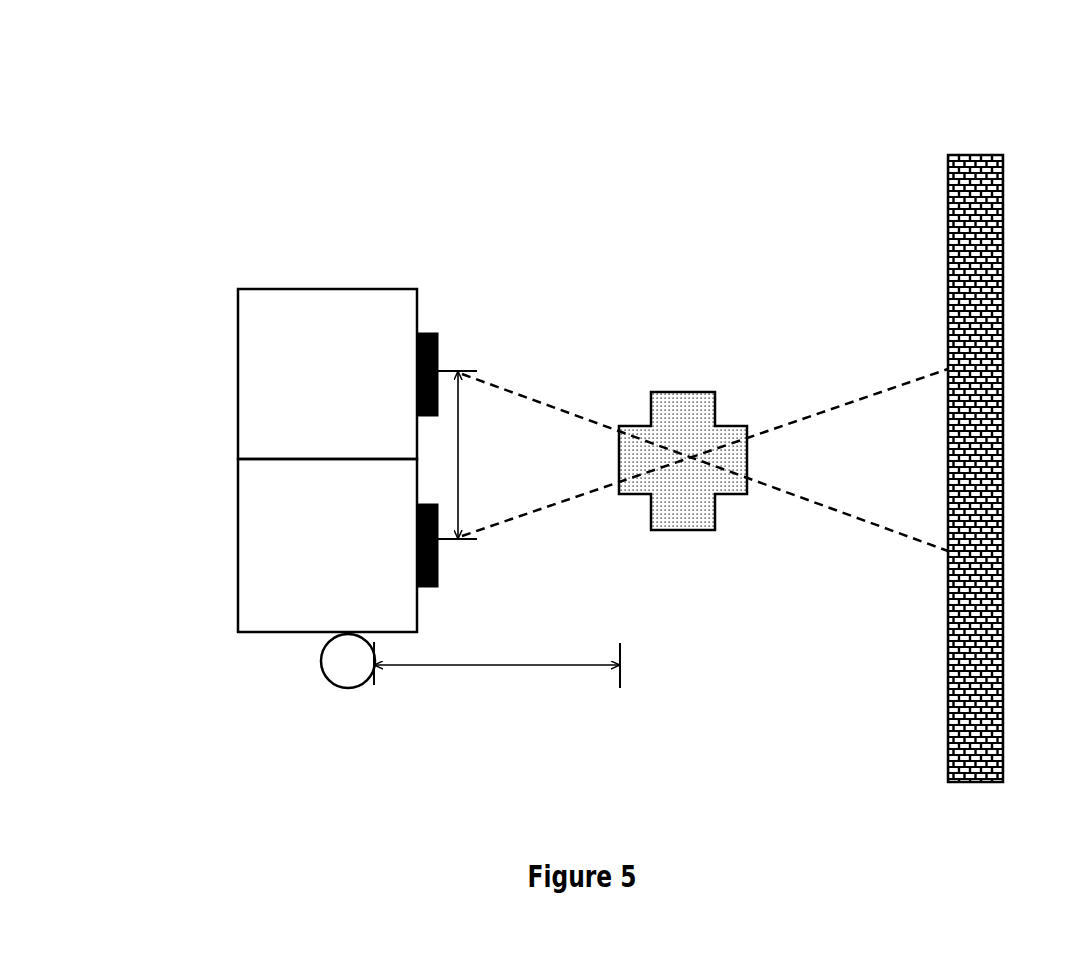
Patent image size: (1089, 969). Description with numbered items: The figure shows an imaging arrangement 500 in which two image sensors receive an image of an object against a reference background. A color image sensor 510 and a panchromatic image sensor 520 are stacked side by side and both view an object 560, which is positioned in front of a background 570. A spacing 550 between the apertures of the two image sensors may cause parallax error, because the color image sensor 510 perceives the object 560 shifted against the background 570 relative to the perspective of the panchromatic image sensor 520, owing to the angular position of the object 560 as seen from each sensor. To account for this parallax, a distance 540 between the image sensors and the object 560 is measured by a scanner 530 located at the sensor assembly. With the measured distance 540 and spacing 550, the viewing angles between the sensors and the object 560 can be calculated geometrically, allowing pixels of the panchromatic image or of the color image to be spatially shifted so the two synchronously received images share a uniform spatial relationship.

The imaging system 500 is at (362, 166).
The color image sensor 510 is at (238, 330).
The panchromatic image sensor 520 is at (238, 493).
The scanner 530 is at (321, 661).
The distance 540 is at (563, 703).
The spacing 550 is at (505, 432).
The object 560 is at (700, 353).
The background 570 is at (977, 110).